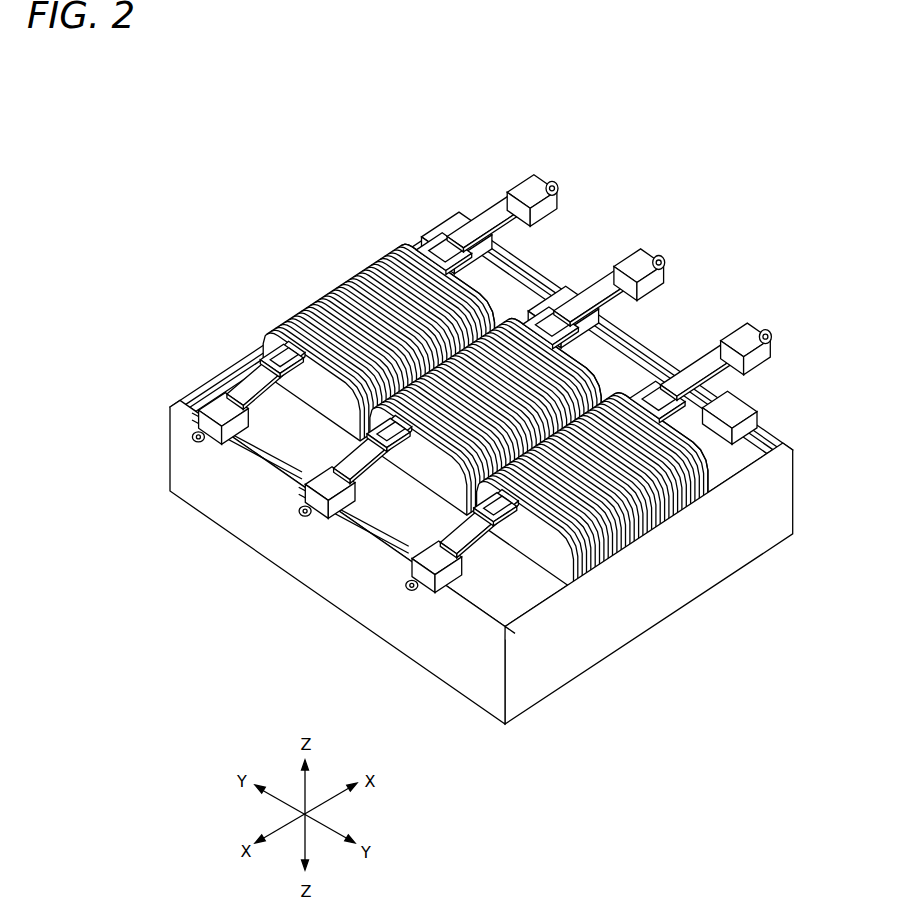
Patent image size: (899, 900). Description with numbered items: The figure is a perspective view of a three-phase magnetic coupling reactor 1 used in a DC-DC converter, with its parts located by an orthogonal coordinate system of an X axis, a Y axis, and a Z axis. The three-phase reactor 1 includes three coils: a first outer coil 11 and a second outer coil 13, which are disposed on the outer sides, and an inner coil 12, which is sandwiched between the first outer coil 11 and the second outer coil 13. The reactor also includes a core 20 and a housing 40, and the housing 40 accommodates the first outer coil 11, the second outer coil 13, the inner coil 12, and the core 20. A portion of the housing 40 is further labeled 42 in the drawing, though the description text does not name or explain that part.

The three-phase magnetic coupling reactor 1 is at (497, 384).
The first outer coil 11 is at (375, 253).
The inner coil 12 is at (514, 343).
The second outer coil 13 is at (623, 421).
The core 20 is at (748, 400).
The housing 40 is at (497, 443).
The side wall 42 is at (244, 513).